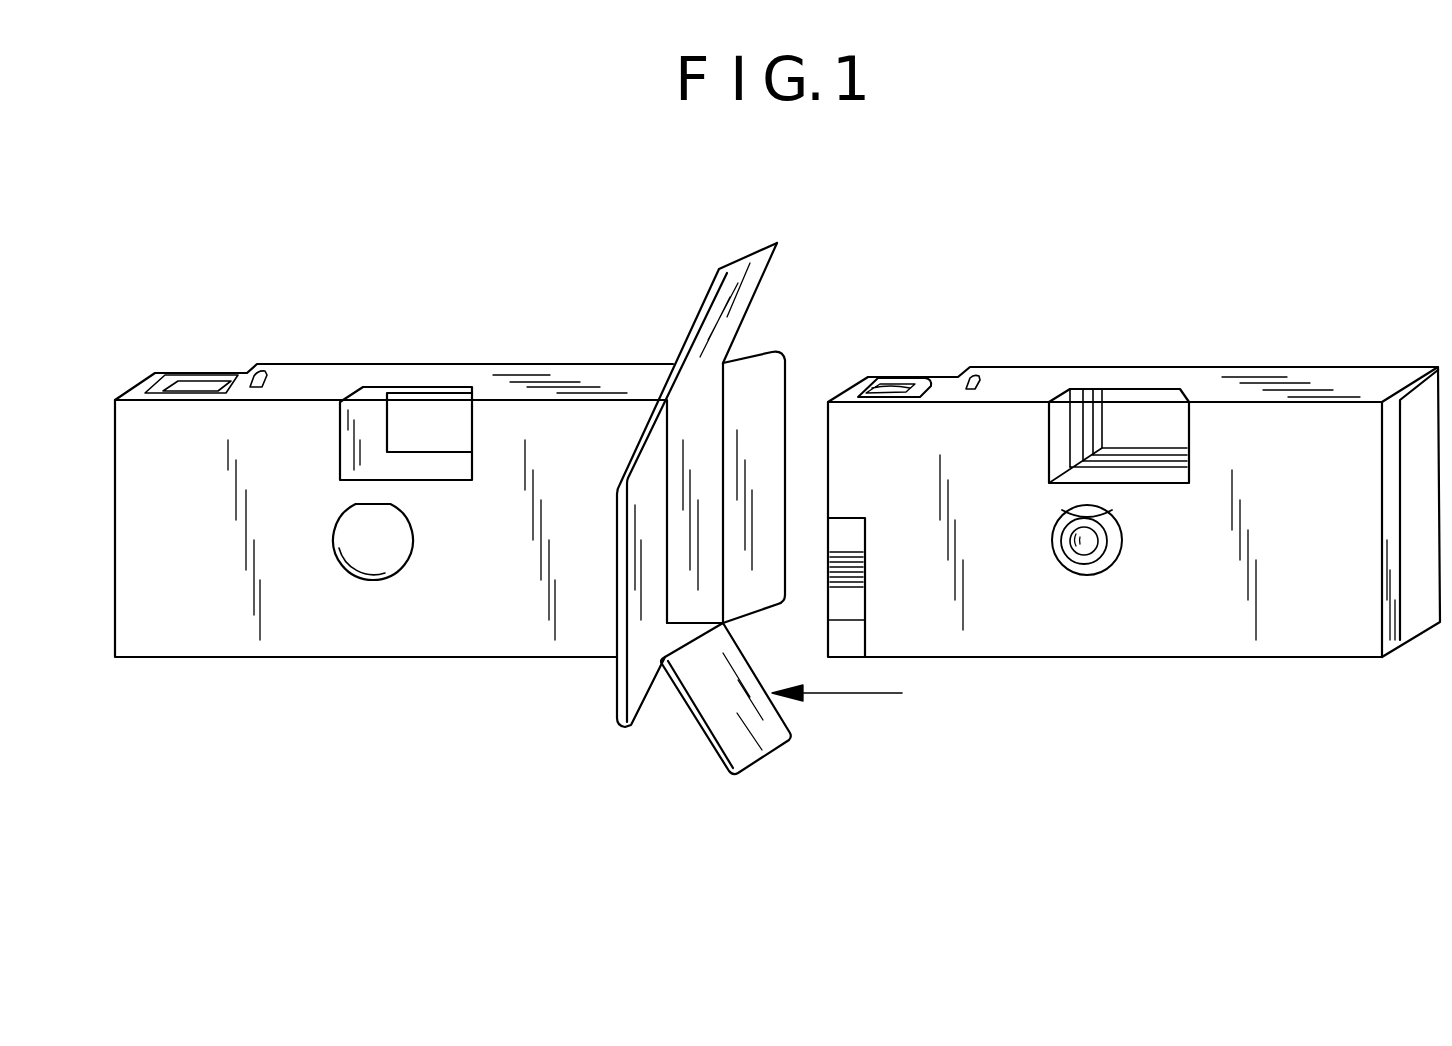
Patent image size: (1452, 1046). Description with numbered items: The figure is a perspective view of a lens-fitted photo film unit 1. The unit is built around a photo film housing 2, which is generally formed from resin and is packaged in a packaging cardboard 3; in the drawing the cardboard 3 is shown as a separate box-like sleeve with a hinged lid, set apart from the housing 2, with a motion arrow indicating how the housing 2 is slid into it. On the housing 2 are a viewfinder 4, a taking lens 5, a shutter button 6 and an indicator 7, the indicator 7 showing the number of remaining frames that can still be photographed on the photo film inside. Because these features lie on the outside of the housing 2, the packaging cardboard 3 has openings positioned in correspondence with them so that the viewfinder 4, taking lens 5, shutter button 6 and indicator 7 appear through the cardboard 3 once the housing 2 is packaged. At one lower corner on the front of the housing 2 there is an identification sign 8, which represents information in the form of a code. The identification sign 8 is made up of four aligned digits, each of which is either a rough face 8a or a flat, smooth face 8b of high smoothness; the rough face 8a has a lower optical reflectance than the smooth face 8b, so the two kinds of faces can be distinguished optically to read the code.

The lens-fitted photo film unit 1 is at (1125, 768).
The photo film housing 2 is at (1322, 620).
The packaging cardboard 3 is at (565, 363).
The viewfinder 4 is at (1145, 402).
The taking lens 5 is at (1091, 542).
The shutter button 6 is at (908, 385).
The indicator 7 is at (978, 375).
The identification sign 8 is at (885, 520).
The rough face 8a is at (825, 565).
The smooth face 8b is at (843, 530).